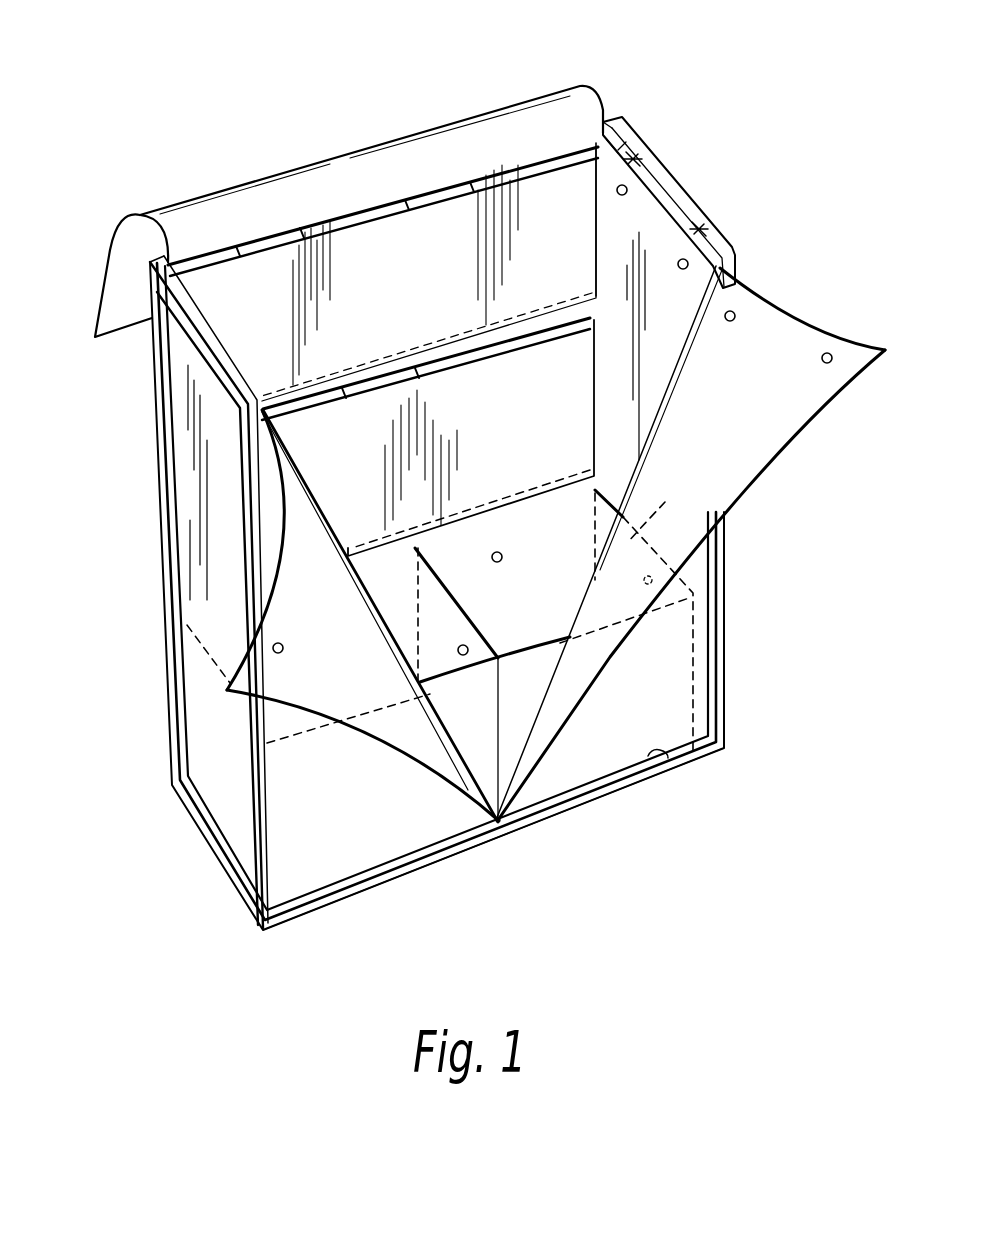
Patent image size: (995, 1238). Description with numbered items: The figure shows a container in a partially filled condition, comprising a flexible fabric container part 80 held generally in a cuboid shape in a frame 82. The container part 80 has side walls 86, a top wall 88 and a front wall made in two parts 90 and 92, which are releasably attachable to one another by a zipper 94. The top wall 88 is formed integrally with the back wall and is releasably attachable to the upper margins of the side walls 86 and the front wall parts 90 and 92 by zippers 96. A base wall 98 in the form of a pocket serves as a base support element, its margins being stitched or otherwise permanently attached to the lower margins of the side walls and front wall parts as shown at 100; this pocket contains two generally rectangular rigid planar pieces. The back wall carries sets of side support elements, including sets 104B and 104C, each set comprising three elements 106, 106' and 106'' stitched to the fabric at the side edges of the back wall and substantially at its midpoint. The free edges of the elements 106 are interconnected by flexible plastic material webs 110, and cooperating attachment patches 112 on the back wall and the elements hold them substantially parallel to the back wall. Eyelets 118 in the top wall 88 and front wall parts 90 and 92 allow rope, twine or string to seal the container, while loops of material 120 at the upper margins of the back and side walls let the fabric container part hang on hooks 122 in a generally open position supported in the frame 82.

The flexible fabric container part 80 is at (622, 88).
The frame 82 is at (136, 403).
The side walls 86 is at (190, 497).
The top wall 88 is at (402, 142).
The front wall part 90 is at (378, 845).
The front wall part 92 is at (747, 437).
The zipper 94 is at (355, 732).
The zippers 96 is at (112, 266).
The base wall 98 is at (540, 812).
The attachment of pocket margins 100 is at (668, 758).
The set of side support elements 104B is at (565, 419).
The set of side support elements 104C is at (447, 276).
The side support element 106 is at (345, 437).
The side support element 106' is at (427, 393).
The side support element 106'' is at (579, 406).
The flexible plastic material webs 110 is at (483, 741).
The cooperating attachment patches 112 is at (503, 553).
The eyelets 118 is at (832, 353).
The loops of material 120 is at (640, 170).
The hooks 122 is at (642, 137).